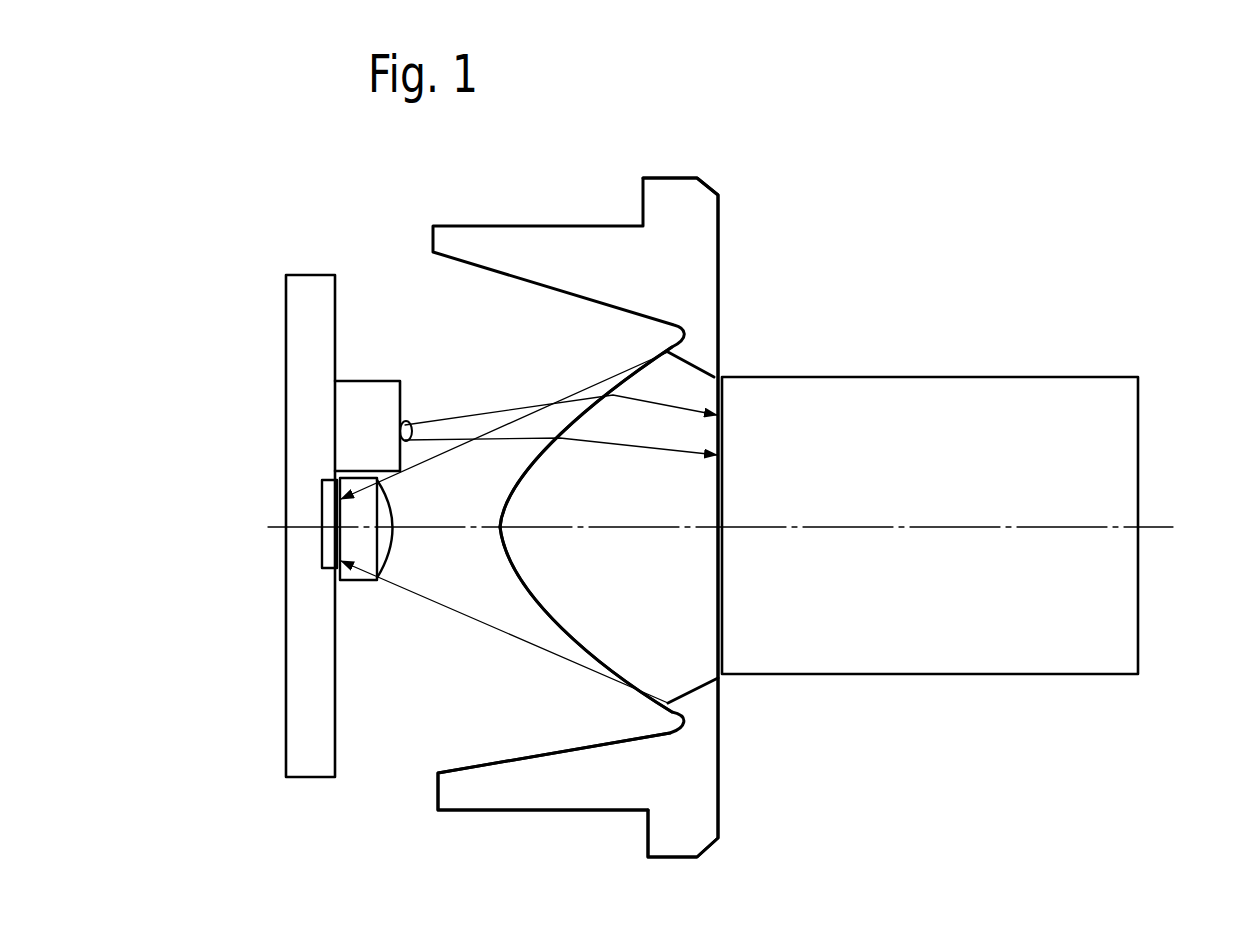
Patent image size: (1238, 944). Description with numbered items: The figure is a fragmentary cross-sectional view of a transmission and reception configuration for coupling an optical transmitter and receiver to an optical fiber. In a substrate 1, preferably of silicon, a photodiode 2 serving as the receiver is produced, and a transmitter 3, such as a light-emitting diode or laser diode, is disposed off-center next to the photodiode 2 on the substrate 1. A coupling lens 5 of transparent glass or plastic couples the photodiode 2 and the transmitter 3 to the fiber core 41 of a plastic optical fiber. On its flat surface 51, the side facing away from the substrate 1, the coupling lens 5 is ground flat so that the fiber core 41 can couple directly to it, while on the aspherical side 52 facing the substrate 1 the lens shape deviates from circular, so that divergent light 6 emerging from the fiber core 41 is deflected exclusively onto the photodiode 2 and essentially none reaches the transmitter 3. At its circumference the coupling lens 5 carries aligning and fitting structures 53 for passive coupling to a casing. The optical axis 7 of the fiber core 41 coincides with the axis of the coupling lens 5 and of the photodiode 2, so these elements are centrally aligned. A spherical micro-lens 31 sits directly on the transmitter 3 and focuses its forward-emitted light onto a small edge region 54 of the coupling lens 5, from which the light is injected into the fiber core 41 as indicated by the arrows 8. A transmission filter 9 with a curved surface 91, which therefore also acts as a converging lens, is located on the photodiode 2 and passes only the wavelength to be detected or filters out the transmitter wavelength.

The substrate 1 is at (303, 372).
The photodiode 2 is at (327, 547).
The transmitter 3 is at (343, 437).
The micro-lens 31 is at (406, 422).
The coupling lens 5 is at (672, 665).
The flat surface 51 is at (719, 247).
The aspherical side 52 is at (541, 604).
The aligning and fitting structures 53 is at (555, 795).
The edge region 54 is at (571, 419).
The divergent light 6 is at (683, 360).
The optical axis 7 is at (1153, 525).
The arrows 8 is at (653, 401).
The transmission filter 9 is at (343, 587).
The curved surface 91 is at (384, 570).
The fiber core 41 is at (967, 650).